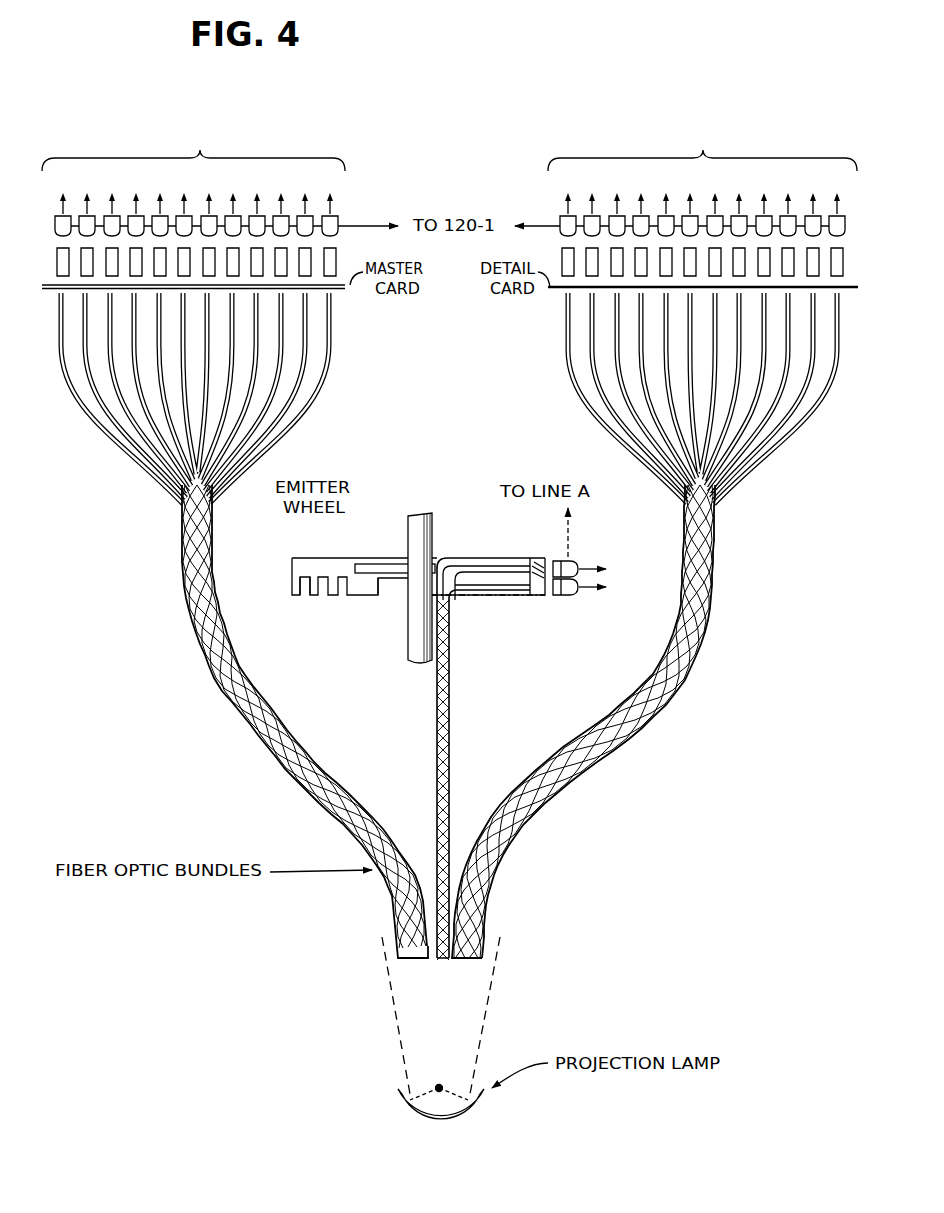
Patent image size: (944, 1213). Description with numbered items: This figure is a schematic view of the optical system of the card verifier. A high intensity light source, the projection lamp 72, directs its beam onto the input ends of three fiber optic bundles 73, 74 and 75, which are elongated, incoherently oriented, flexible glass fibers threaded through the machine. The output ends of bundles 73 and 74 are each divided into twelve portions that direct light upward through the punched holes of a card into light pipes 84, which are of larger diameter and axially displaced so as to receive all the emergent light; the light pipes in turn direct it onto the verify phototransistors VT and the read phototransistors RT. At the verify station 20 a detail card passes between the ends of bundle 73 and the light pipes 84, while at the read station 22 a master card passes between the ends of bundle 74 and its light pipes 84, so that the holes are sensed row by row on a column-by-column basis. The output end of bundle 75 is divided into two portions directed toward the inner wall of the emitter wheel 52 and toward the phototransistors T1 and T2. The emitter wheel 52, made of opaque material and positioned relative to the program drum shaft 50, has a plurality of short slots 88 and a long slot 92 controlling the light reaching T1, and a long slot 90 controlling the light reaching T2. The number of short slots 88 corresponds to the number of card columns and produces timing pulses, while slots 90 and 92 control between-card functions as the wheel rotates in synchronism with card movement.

The verify station 20 is at (787, 452).
The read station 22 is at (127, 468).
The program drum shaft 50 is at (416, 513).
The emitter wheel 52 is at (342, 558).
The projection lamp 72 is at (406, 1099).
The fiber optic bundle 73 is at (552, 808).
The fiber optic bundle 74 is at (258, 735).
The fiber optic bundle 75 is at (437, 707).
The light pipes 84 is at (334, 255).
The short slots 88 is at (300, 597).
The long slot 90 is at (377, 573).
The long slot 92 is at (385, 597).
The phototransistor T1 is at (565, 593).
The phototransistor T2 is at (575, 562).
The read phototransistors RT is at (336, 218).
The verify phototransistors VT is at (595, 218).